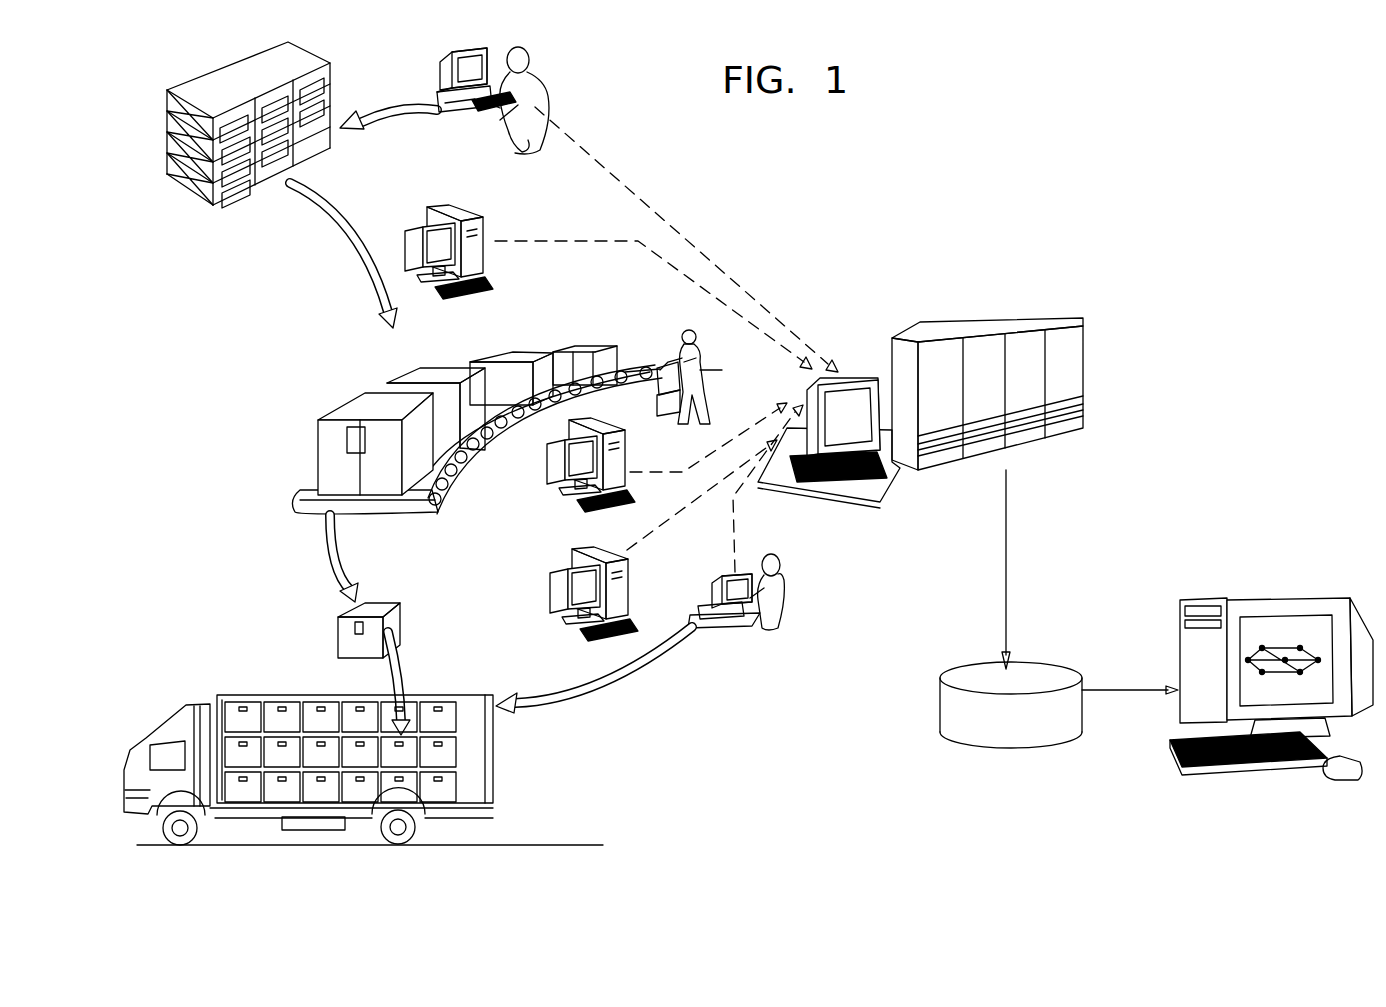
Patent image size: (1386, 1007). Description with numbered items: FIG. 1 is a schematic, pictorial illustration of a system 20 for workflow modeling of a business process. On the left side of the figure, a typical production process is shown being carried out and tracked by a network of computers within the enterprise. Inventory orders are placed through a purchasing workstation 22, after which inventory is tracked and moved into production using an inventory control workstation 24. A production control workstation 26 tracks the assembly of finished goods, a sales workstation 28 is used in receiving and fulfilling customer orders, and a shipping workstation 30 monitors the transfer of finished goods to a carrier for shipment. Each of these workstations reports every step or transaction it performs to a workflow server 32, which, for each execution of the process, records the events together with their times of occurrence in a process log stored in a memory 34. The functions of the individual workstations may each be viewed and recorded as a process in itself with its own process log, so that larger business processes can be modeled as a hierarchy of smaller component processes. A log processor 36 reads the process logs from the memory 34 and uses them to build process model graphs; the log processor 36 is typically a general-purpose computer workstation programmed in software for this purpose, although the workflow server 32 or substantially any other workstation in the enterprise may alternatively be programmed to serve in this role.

The system 20 is at (1128, 211).
The purchasing workstation 22 is at (437, 93).
The inventory control workstation 24 is at (478, 220).
The production control workstation 26 is at (556, 485).
The sales workstation 28 is at (740, 583).
The shipping workstation 30 is at (574, 562).
The workflow server 32 is at (946, 336).
The memory 34 is at (1052, 676).
The log processor 36 is at (1178, 633).